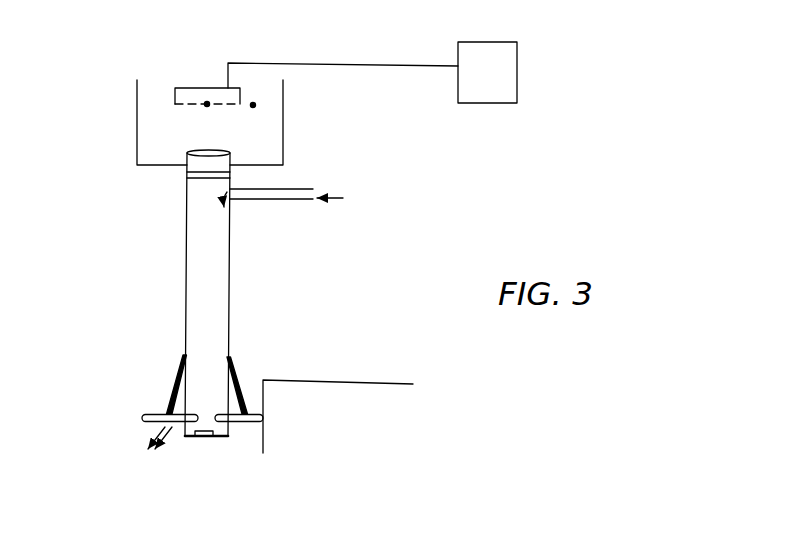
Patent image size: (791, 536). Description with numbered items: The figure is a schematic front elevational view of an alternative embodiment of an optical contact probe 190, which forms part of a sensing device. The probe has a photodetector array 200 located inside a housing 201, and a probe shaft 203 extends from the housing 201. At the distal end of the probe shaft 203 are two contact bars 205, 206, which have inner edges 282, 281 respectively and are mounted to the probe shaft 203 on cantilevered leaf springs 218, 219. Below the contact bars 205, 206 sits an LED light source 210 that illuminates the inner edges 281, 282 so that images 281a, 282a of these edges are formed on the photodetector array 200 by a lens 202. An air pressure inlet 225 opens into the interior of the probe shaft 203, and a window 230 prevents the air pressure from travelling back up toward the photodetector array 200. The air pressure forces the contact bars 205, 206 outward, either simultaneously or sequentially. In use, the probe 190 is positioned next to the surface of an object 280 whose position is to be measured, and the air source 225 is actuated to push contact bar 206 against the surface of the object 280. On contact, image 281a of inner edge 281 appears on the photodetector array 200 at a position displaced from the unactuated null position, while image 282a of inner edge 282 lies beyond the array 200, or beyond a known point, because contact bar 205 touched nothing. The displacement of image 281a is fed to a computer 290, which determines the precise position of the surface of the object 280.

The optical contact probe 190 is at (150, 323).
The photodetector array 200 is at (219, 88).
The housing 201 is at (285, 110).
The lens 202 is at (197, 152).
The probe shaft 203 is at (192, 268).
The contact bar 205 is at (178, 427).
The contact bar 206 is at (250, 427).
The LED light source 210 is at (204, 438).
The cantilevered leaf spring 218 is at (177, 393).
The cantilevered leaf spring 219 is at (226, 412).
The air pressure inlet 225 is at (255, 201).
The window 230 is at (187, 173).
The object 280 is at (350, 432).
The inner edge 281 is at (232, 381).
The image 281a is at (207, 104).
The inner edge 282 is at (193, 414).
The image 282a is at (253, 105).
The computer 290 is at (507, 80).